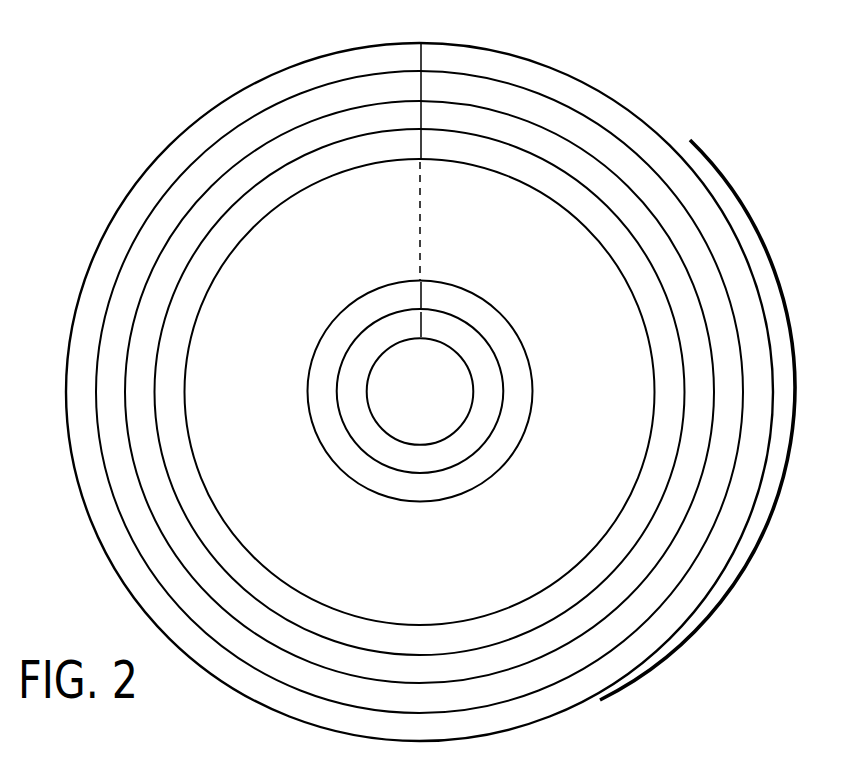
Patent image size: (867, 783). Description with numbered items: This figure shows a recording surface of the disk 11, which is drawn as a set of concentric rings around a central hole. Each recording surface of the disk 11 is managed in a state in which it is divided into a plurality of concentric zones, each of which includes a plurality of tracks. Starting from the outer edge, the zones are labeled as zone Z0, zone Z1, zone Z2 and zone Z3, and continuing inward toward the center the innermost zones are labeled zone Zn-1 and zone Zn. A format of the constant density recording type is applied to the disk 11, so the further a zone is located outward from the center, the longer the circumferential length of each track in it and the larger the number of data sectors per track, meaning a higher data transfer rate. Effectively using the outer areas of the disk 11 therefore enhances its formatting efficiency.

The disk 11 is at (741, 548).
The zone Z0 is at (421, 55).
The zone Z1 is at (421, 84).
The zone Z2 is at (421, 116).
The zone Z3 is at (421, 143).
The zone Zn-1 is at (421, 294).
The zone Zn is at (421, 325).